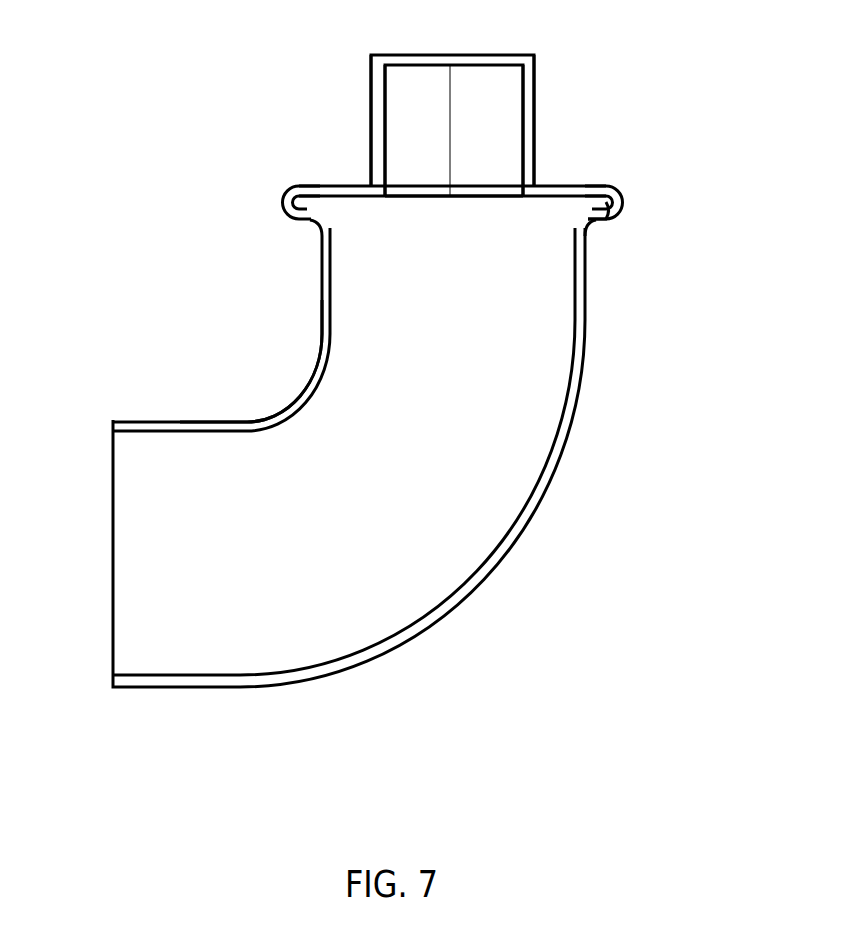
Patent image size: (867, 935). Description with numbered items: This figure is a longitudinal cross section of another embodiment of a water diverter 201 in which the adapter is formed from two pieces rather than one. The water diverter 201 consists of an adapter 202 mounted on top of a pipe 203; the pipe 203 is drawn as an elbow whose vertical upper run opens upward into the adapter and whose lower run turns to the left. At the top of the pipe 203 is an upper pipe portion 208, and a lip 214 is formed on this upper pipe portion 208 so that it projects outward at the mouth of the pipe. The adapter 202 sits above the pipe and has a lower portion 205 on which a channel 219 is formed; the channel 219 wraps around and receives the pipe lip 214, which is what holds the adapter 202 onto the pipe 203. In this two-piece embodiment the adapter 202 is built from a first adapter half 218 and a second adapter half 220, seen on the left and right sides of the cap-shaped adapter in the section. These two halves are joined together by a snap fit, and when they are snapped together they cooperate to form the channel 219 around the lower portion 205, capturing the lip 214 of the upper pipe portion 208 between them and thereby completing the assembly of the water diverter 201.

The water diverter 201 is at (462, 253).
The adapter 202 is at (538, 138).
The pipe 203 is at (308, 378).
The lower portion 205 is at (440, 188).
The upper pipe portion 208 is at (613, 222).
The lip 214 is at (620, 193).
The first adapter half 218 is at (370, 150).
The channel 219 is at (285, 190).
The second adapter half 220 is at (536, 155).